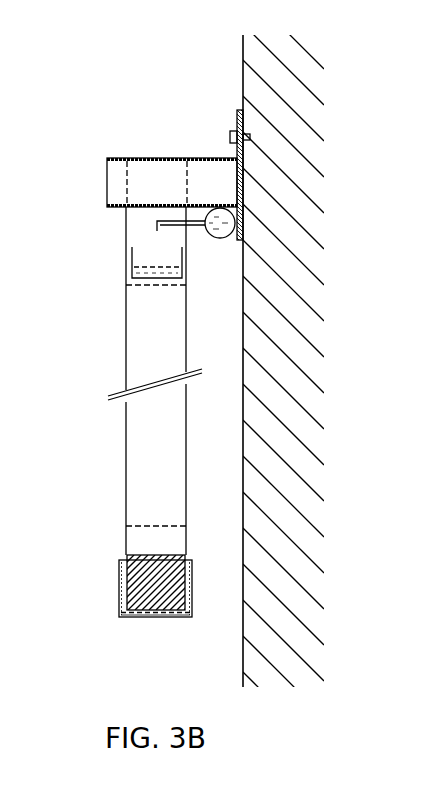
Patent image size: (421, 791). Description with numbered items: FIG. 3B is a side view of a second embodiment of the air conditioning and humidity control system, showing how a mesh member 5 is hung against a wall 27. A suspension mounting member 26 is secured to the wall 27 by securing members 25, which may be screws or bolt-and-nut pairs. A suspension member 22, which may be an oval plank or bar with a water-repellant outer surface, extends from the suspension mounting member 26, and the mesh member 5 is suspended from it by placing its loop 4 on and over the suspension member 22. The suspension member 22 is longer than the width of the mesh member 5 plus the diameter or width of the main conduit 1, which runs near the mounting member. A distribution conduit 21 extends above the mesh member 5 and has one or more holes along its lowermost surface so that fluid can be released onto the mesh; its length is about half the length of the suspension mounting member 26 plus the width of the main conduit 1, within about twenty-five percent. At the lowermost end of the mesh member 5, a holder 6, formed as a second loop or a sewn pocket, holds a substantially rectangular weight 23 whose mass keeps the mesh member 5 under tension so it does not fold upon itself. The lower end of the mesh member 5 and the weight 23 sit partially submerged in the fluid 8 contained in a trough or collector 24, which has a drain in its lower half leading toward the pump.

The main conduit 1 is at (221, 238).
The loop 4 is at (132, 262).
The mesh member 5 is at (126, 345).
The holder 6 is at (126, 533).
The fluid 8 is at (120, 607).
The distribution conduit 21 is at (147, 228).
The suspension member 22 is at (107, 170).
The weight 23 is at (120, 573).
The trough or collector 24 is at (158, 617).
The securing member 25 is at (230, 137).
The suspension mounting member 26 is at (237, 110).
The wall 27 is at (296, 353).